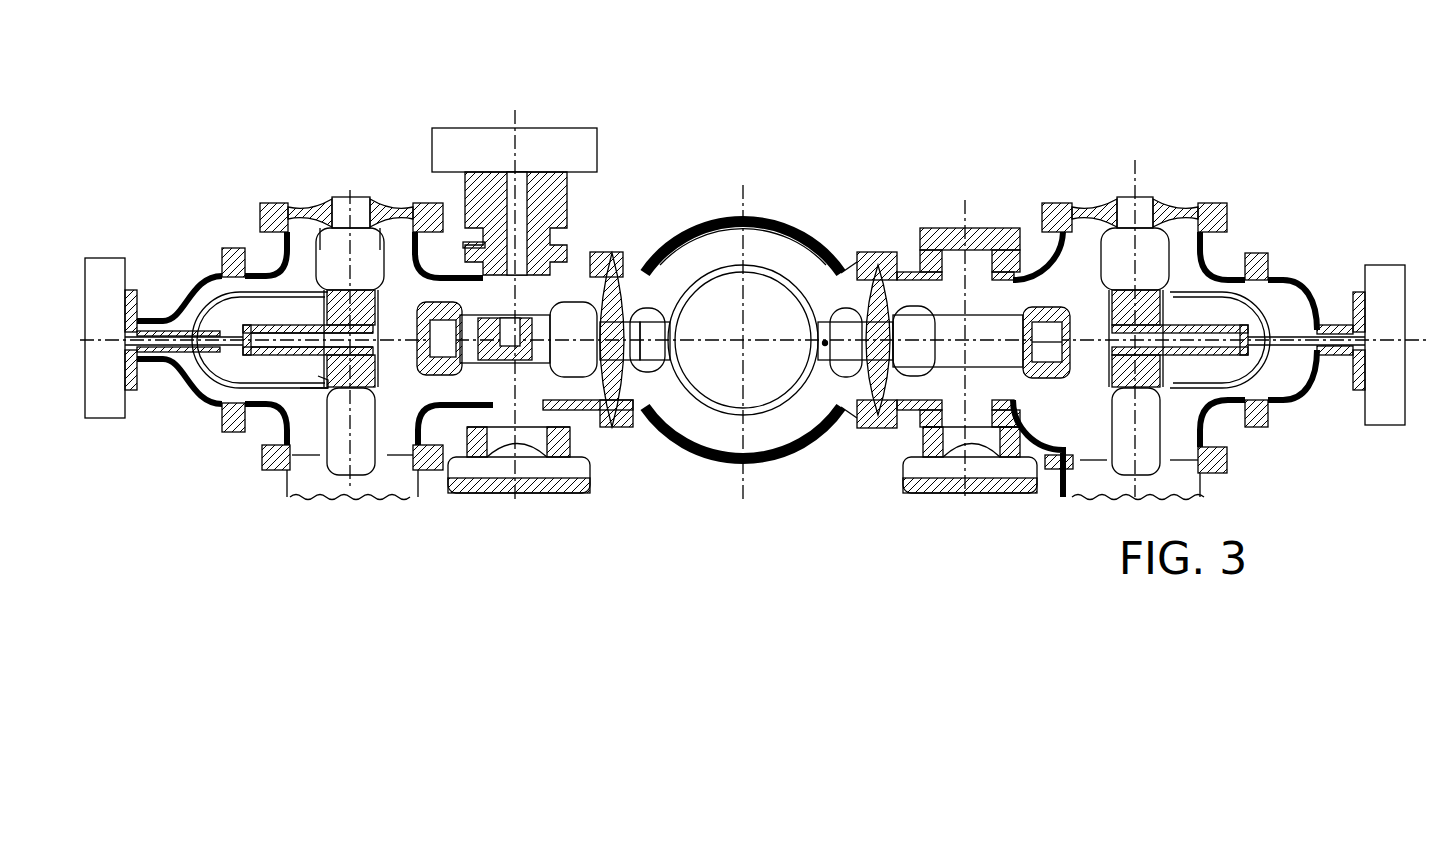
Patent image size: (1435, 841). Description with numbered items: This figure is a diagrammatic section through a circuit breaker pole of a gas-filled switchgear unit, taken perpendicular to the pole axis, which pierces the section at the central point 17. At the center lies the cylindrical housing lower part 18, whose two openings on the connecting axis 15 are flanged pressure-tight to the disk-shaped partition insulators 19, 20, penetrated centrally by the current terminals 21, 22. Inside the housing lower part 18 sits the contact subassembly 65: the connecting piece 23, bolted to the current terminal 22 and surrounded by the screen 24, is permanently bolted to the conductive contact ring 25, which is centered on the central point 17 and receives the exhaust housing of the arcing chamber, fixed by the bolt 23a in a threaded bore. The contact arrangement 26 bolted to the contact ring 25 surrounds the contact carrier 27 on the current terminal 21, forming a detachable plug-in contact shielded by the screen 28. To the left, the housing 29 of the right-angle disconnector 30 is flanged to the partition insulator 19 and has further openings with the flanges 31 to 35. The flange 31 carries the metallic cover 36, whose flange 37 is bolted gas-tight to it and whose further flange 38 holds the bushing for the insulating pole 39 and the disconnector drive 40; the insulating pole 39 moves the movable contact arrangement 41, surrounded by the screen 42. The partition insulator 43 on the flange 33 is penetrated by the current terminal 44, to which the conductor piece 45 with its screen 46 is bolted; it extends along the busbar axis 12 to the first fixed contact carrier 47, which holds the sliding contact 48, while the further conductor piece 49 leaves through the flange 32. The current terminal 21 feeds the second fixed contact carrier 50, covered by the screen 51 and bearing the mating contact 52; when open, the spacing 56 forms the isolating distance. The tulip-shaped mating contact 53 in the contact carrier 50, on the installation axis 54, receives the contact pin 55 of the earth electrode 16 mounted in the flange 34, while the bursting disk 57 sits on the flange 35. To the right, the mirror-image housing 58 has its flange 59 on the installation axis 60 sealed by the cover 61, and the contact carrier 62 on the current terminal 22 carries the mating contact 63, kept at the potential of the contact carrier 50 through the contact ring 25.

The busbar axis 12 is at (347, 172).
The connecting axis 15 is at (1420, 345).
The earth electrode 16 is at (533, 143).
The central point 17 is at (750, 353).
The housing lower part 18 is at (767, 213).
The partition insulator 19 is at (613, 428).
The partition insulator 20 is at (878, 414).
The current terminal 21 is at (611, 327).
The current terminal 22 is at (877, 330).
The connecting piece 23 is at (845, 352).
The bolt 23a is at (825, 343).
The screen 24 is at (841, 270).
The contact ring 25 is at (720, 408).
The contact arrangement 26 is at (658, 352).
The contact carrier 27 is at (633, 368).
The screen 28 is at (648, 360).
The housing 29 is at (243, 248).
The disconnector 30 is at (418, 579).
The flange 31 is at (237, 432).
The flange 32 is at (273, 385).
The flange 33 is at (256, 212).
The flange 34 is at (450, 270).
The flange 35 is at (575, 410).
The cover 36 is at (182, 292).
The flange 37 is at (236, 255).
The flange 38 is at (130, 392).
The insulating pole 39 is at (190, 368).
The disconnector drive 40 is at (100, 258).
The movable contact arrangement 41 is at (300, 340).
The screen 42 is at (255, 384).
The partition insulator 43 is at (318, 206).
The current terminal 44 is at (333, 197).
The conductor piece 45 is at (360, 250).
The screen 46 is at (398, 230).
The first fixed contact carrier 47 is at (340, 380).
The sliding contact 48 is at (383, 320).
The conductor piece 49 is at (365, 390).
The second fixed contact carrier 50 is at (570, 358).
The screen 51 is at (575, 278).
The mating contact 52 is at (405, 410).
The mating contact 53 is at (470, 458).
The installation axis 54 is at (519, 538).
The contact pin 55 is at (490, 262).
The spacing 56 is at (400, 337).
The bursting disk 57 is at (513, 462).
The housing 58 is at (1218, 258).
The flange 59 is at (932, 228).
The installation axis 60 is at (967, 514).
The cover 61 is at (1000, 228).
The contact carrier 62 is at (987, 355).
The mating contact 63 is at (1045, 379).
The contact subassembly 65 is at (711, 258).